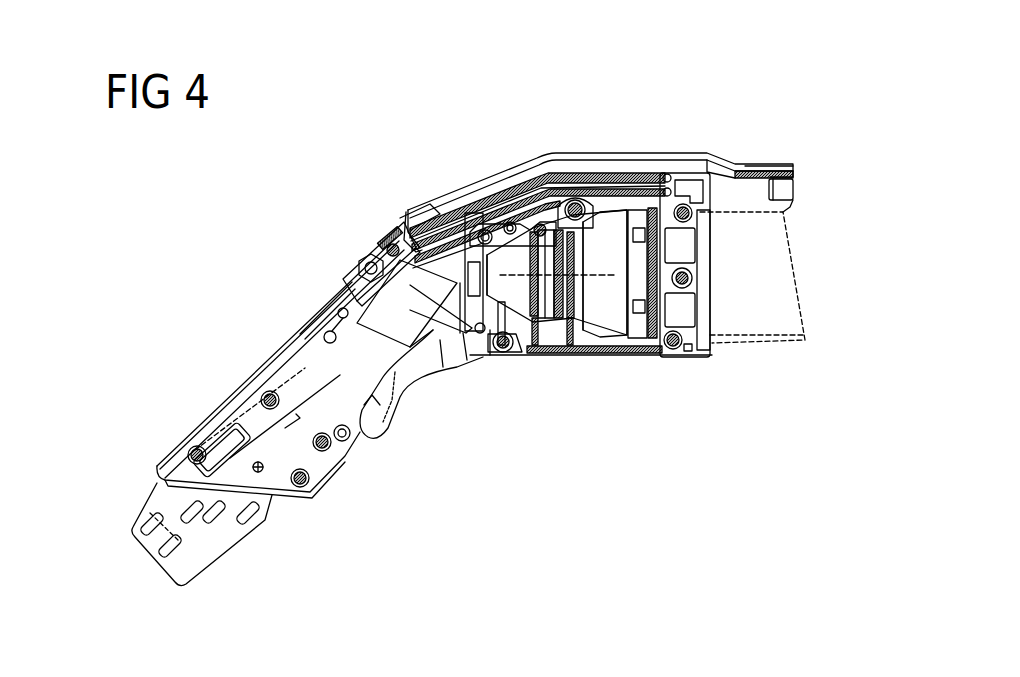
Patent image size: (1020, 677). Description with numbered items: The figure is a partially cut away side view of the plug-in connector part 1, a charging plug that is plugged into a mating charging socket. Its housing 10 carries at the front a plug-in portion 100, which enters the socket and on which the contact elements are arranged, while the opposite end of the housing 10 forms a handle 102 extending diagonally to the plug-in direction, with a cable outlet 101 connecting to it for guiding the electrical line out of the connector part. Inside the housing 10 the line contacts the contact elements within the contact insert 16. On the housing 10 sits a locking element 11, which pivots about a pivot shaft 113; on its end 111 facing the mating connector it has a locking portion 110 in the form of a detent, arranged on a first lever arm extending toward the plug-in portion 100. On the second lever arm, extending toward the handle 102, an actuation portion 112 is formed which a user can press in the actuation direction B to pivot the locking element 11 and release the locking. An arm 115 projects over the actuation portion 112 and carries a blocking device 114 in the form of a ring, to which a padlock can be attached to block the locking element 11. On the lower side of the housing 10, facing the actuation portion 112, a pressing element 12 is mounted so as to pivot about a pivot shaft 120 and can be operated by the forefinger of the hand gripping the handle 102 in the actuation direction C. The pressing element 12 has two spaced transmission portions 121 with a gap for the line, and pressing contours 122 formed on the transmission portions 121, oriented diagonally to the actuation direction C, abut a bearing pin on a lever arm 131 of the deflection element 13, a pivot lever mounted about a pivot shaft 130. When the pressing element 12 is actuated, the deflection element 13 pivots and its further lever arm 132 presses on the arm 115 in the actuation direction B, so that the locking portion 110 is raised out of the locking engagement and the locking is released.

The plug-in connector part 1 is at (589, 106).
The actuation direction B is at (452, 172).
The actuation direction C is at (427, 396).
The housing 10 is at (573, 357).
The locking element 11 is at (670, 163).
The pressing element 12 is at (402, 387).
The deflection element 13 is at (345, 290).
The contact insert 16 is at (598, 312).
The plug-in portion 100 is at (747, 342).
The cable outlet 101 is at (228, 550).
The handle 102 is at (293, 337).
The locking portion 110 is at (787, 191).
The end 111 is at (780, 163).
The actuation portion 112 is at (505, 190).
The pivot shaft 113 is at (582, 203).
The blocking device 114 is at (368, 262).
The arm 115 is at (412, 265).
The pivot shaft 120 is at (481, 338).
The transmission portion 121 is at (354, 363).
The pressing contour 122 is at (335, 462).
The pivot shaft 130 is at (337, 293).
The lever arm 131 is at (333, 308).
The lever arm 132 is at (356, 275).